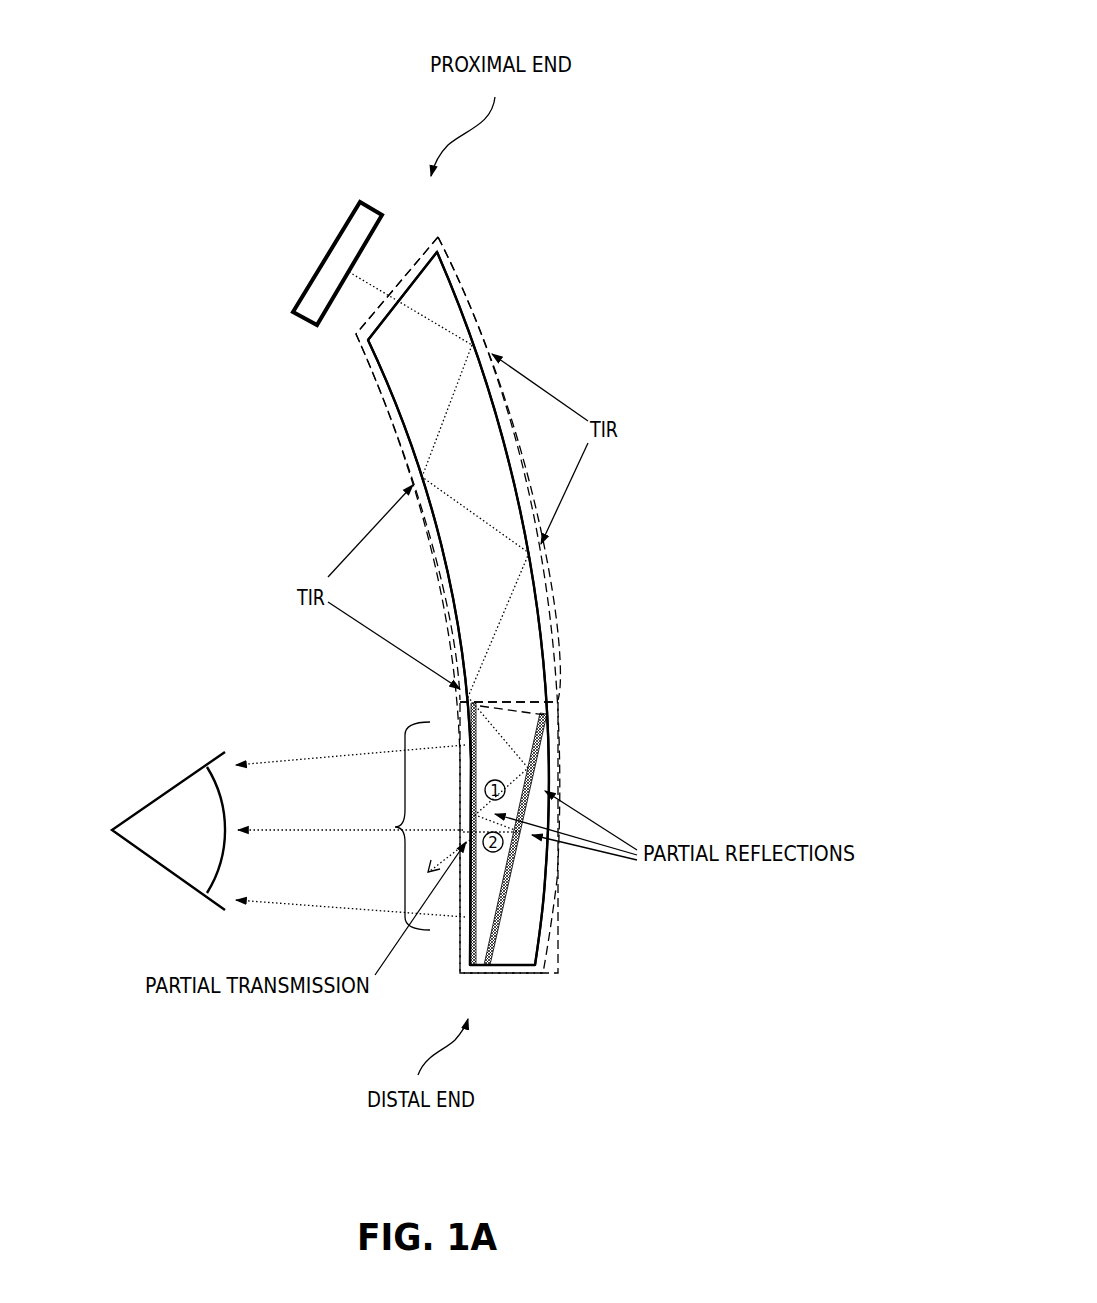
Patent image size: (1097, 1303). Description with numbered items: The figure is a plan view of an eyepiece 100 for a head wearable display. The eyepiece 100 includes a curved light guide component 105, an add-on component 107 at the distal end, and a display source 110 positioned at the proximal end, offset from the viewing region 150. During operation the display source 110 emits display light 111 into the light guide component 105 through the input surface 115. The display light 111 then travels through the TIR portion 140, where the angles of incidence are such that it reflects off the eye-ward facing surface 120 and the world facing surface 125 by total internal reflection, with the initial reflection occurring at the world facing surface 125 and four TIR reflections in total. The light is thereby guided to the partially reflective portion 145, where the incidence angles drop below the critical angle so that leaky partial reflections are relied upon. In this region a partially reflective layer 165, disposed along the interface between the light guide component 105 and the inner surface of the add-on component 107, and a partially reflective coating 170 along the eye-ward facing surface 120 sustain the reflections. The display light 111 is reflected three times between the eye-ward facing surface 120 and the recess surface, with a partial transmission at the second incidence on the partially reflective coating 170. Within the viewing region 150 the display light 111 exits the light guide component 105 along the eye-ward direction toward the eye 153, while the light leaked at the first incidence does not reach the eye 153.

The eyepiece 100 is at (719, 72).
The light guide component 105 is at (483, 478).
The add-on component 107 is at (512, 957).
The display source 110 is at (357, 203).
The display light 111 is at (367, 278).
The input surface 115 is at (381, 322).
The eye-ward facing surface 120 is at (349, 470).
The world facing surface 125 is at (640, 522).
The total internal reflection portion 140 is at (465, 289).
The partially reflective portion 145 is at (560, 738).
The viewing region 150 is at (395, 827).
The eye 153 is at (193, 840).
The partially reflective layer 165 is at (537, 763).
The partially reflective coating 170 is at (467, 935).